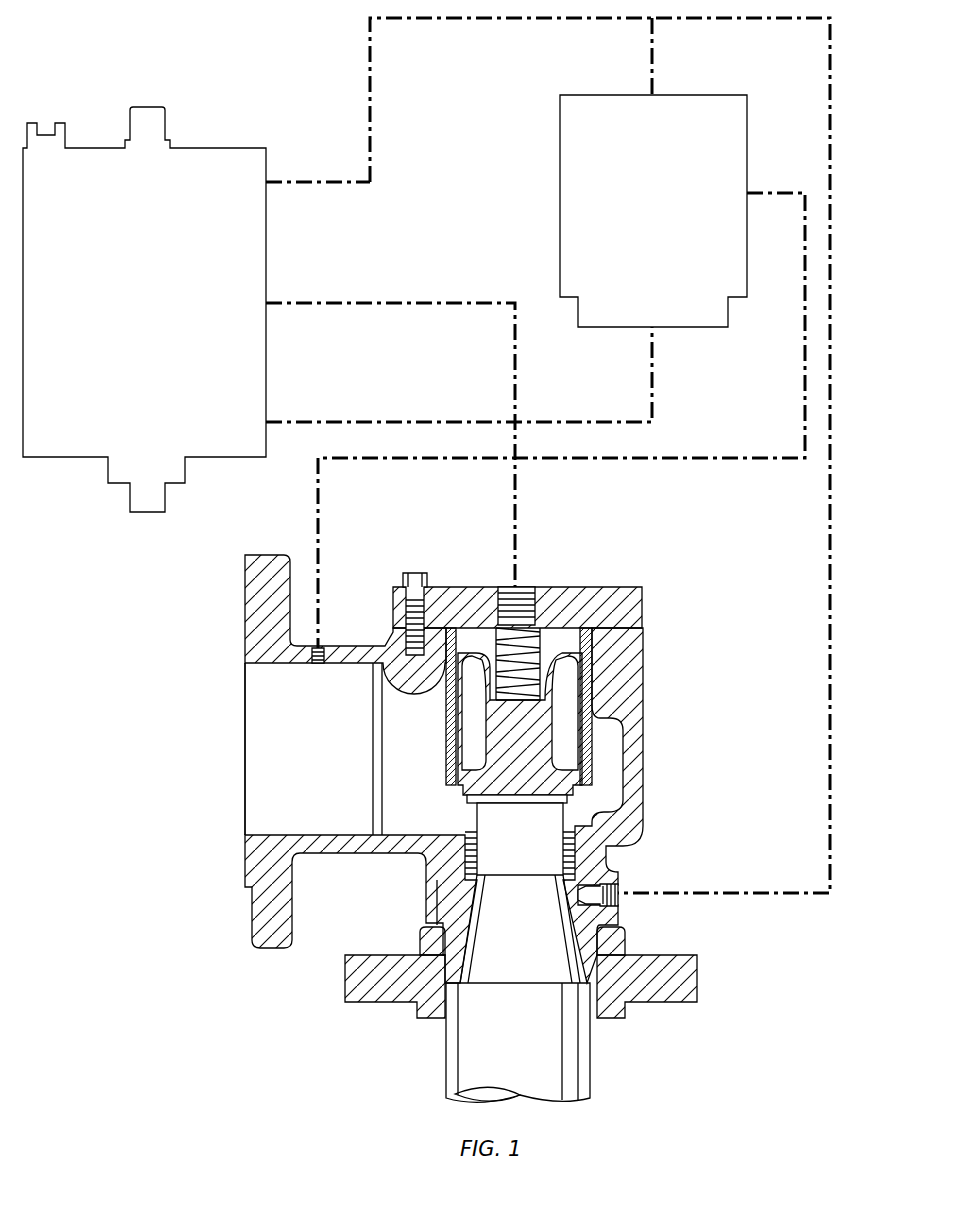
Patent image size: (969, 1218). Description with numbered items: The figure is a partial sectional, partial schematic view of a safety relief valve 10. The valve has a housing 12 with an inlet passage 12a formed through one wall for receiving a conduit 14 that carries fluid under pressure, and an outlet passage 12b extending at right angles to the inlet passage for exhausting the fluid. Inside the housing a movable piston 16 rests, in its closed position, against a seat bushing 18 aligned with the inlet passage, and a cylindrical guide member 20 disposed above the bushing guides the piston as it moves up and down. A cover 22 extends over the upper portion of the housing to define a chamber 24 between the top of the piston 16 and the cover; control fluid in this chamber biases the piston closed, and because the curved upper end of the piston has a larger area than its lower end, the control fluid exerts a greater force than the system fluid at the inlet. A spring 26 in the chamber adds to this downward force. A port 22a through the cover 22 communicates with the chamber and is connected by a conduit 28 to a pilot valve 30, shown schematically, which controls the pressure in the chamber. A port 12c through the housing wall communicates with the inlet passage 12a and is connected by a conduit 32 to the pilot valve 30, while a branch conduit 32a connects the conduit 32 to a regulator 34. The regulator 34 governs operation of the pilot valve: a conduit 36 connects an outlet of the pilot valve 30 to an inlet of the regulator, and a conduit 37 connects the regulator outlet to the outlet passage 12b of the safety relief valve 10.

The safety relief valve 10 is at (676, 665).
The housing 12 is at (243, 640).
The inlet passage 12a is at (567, 938).
The outlet passage 12b is at (247, 822).
The port 12c is at (628, 906).
The conduit 14 is at (531, 1045).
The piston 16 is at (530, 749).
The seat bushing 18 is at (462, 816).
The cylindrical guide member 20 is at (446, 740).
The cover 22 is at (645, 600).
The port 22a is at (506, 586).
The chamber 24 is at (464, 628).
The spring 26 is at (557, 610).
The conduit 28 is at (517, 375).
The pilot valve 30 is at (158, 314).
The conduit 32 is at (833, 508).
The branch conduit 32a is at (655, 75).
The regulator 34 is at (667, 215).
The conduit 36 is at (378, 420).
The conduit 37 is at (805, 385).